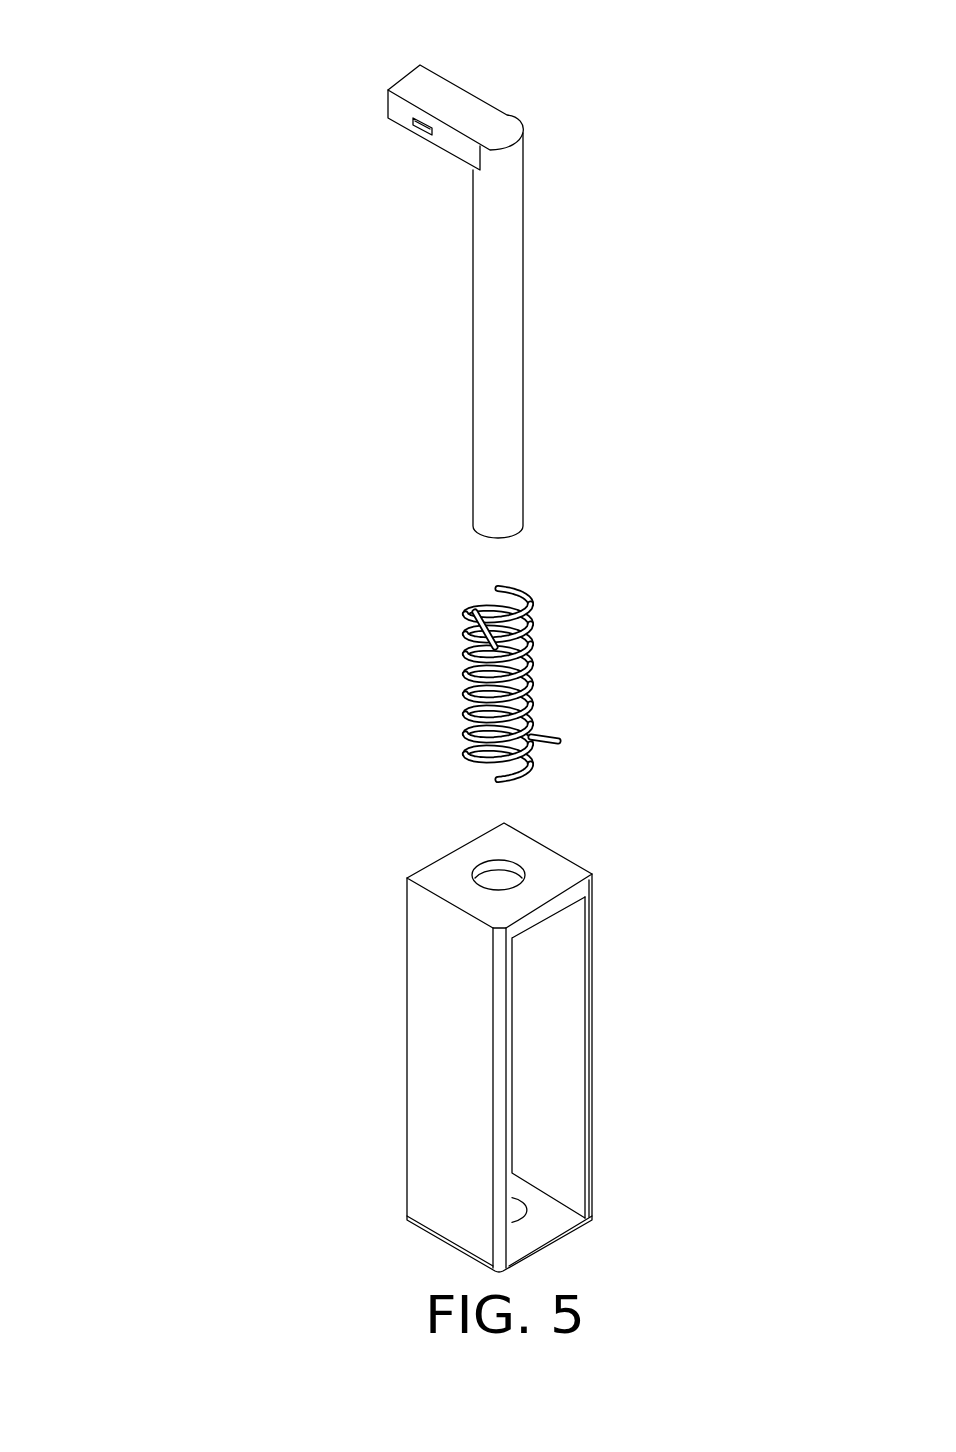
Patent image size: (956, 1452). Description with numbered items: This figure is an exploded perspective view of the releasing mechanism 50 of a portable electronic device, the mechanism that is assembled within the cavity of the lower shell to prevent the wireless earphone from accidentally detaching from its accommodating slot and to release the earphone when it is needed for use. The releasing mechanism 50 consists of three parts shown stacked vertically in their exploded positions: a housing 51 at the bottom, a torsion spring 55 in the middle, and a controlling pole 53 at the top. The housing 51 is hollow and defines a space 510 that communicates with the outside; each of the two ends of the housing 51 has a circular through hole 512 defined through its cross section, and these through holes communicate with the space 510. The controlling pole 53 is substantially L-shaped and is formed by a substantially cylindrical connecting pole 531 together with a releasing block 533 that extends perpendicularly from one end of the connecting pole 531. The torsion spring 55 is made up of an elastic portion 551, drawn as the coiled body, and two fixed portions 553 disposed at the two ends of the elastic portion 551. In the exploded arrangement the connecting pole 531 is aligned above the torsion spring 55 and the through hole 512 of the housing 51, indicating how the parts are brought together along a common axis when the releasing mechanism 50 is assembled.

The releasing mechanism 50 is at (182, 60).
The controlling pole 53 is at (547, 220).
The connecting pole 531 is at (507, 325).
The releasing block 533 is at (473, 112).
The torsion spring 55 is at (553, 668).
The elastic portion 551 is at (470, 686).
The fixed portions 553 is at (482, 630).
The housing 51 is at (612, 973).
The space 510 is at (563, 1062).
The circular through hole 512 is at (492, 882).